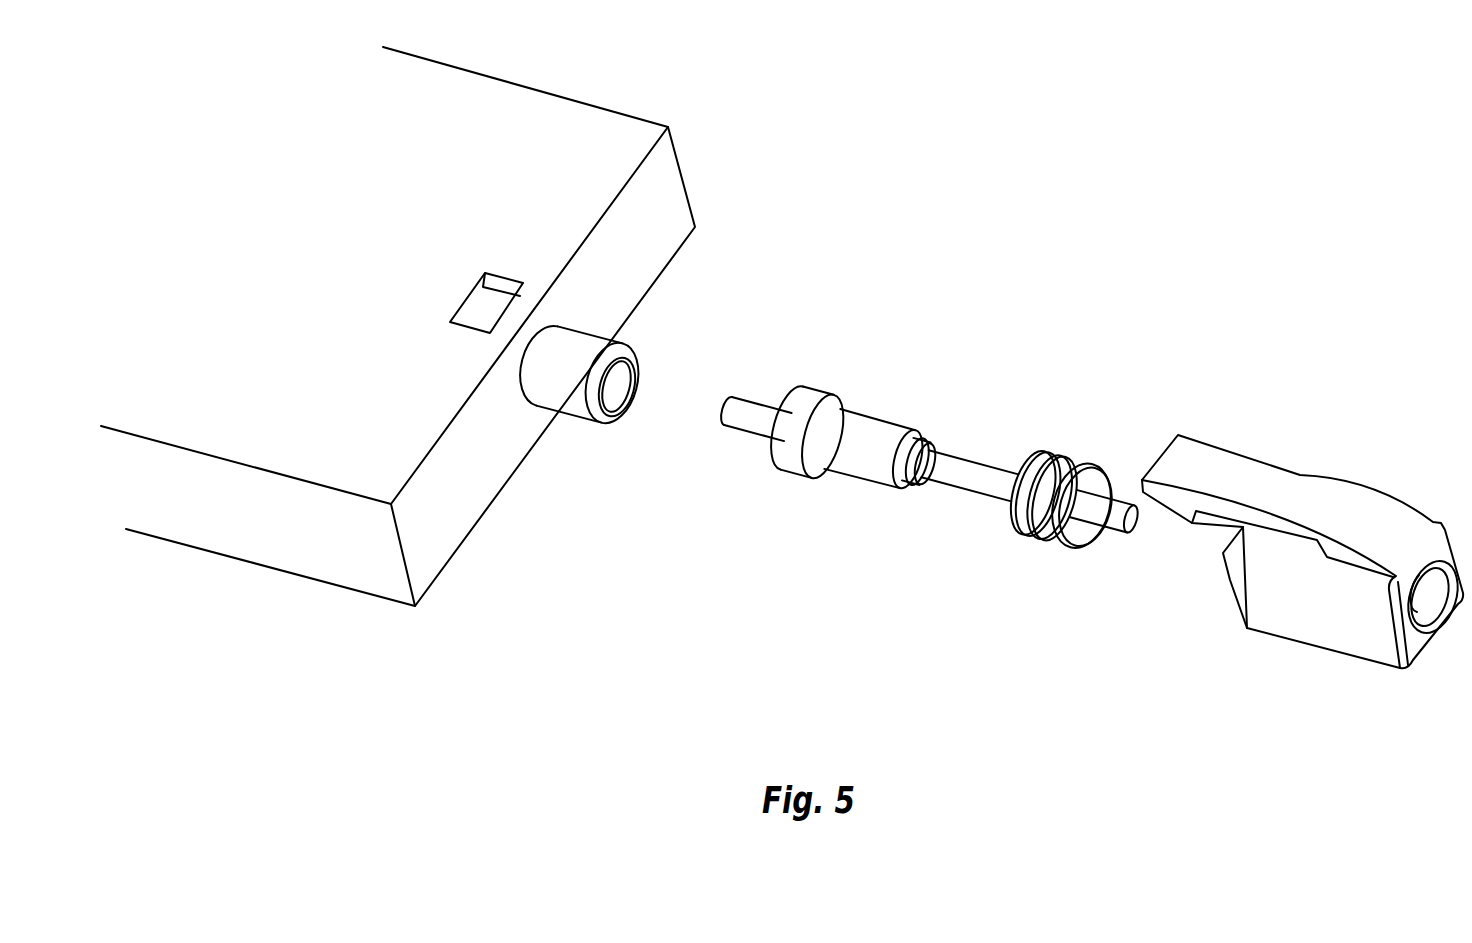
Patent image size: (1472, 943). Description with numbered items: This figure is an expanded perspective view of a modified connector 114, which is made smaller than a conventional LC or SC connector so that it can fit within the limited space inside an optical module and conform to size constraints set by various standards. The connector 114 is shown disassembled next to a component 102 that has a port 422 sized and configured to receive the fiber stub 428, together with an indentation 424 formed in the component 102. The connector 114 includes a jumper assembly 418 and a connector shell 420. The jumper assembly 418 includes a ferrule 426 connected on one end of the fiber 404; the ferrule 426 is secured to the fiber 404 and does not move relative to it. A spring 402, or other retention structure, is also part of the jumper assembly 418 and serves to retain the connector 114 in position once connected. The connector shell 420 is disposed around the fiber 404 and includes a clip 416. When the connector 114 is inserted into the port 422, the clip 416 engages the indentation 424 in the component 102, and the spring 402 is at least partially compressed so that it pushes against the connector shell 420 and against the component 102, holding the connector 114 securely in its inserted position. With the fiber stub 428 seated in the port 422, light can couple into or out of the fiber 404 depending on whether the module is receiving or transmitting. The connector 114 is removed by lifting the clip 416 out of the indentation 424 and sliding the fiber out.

The component 102 is at (375, 578).
The connector 114 is at (1073, 675).
The spring 402 is at (1097, 479).
The fiber 404 is at (977, 473).
The clip 416 is at (1190, 527).
The jumper assembly 418 is at (953, 455).
The connector shell 420 is at (1304, 542).
The port 422 is at (633, 368).
The indentation 424 is at (488, 300).
The ferrule 426 is at (857, 392).
The fiber stub 428 is at (767, 402).